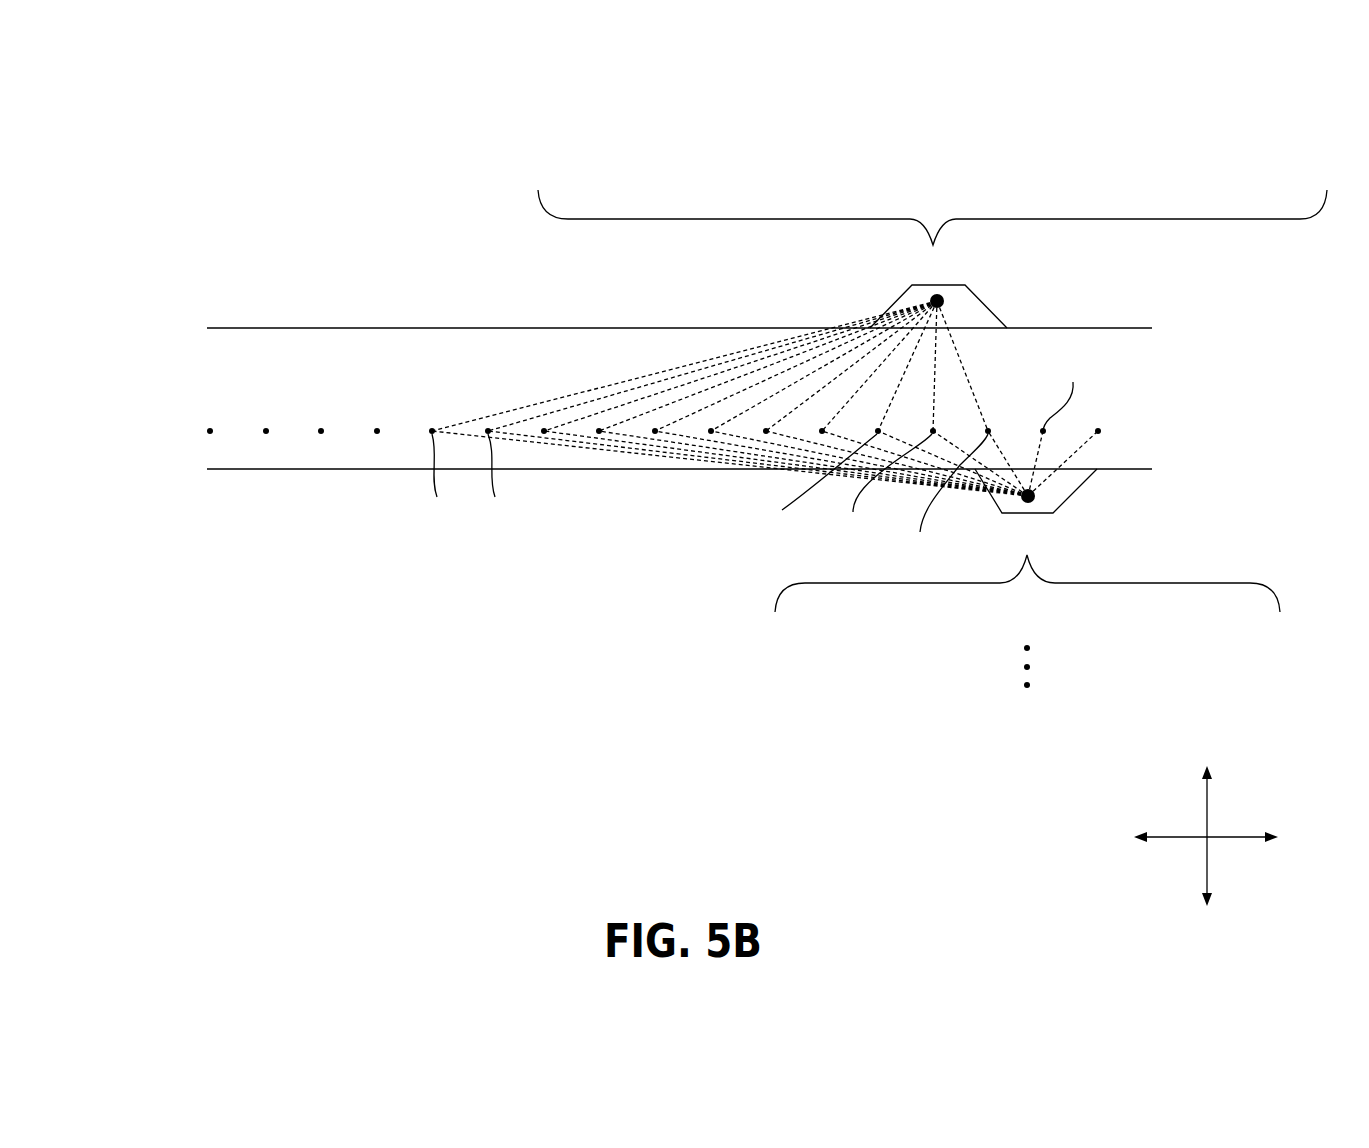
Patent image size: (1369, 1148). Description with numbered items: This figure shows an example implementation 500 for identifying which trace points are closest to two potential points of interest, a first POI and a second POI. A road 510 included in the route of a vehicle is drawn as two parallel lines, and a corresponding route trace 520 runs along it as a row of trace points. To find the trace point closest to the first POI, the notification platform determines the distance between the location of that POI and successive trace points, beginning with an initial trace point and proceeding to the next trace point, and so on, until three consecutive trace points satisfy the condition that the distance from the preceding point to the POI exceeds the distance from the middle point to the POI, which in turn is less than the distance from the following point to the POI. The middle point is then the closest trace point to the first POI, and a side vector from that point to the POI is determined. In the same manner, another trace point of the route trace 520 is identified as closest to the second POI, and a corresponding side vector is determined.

The example implementation 500 is at (170, 62).
The road 510 is at (644, 328).
The route trace 520 is at (188, 431).